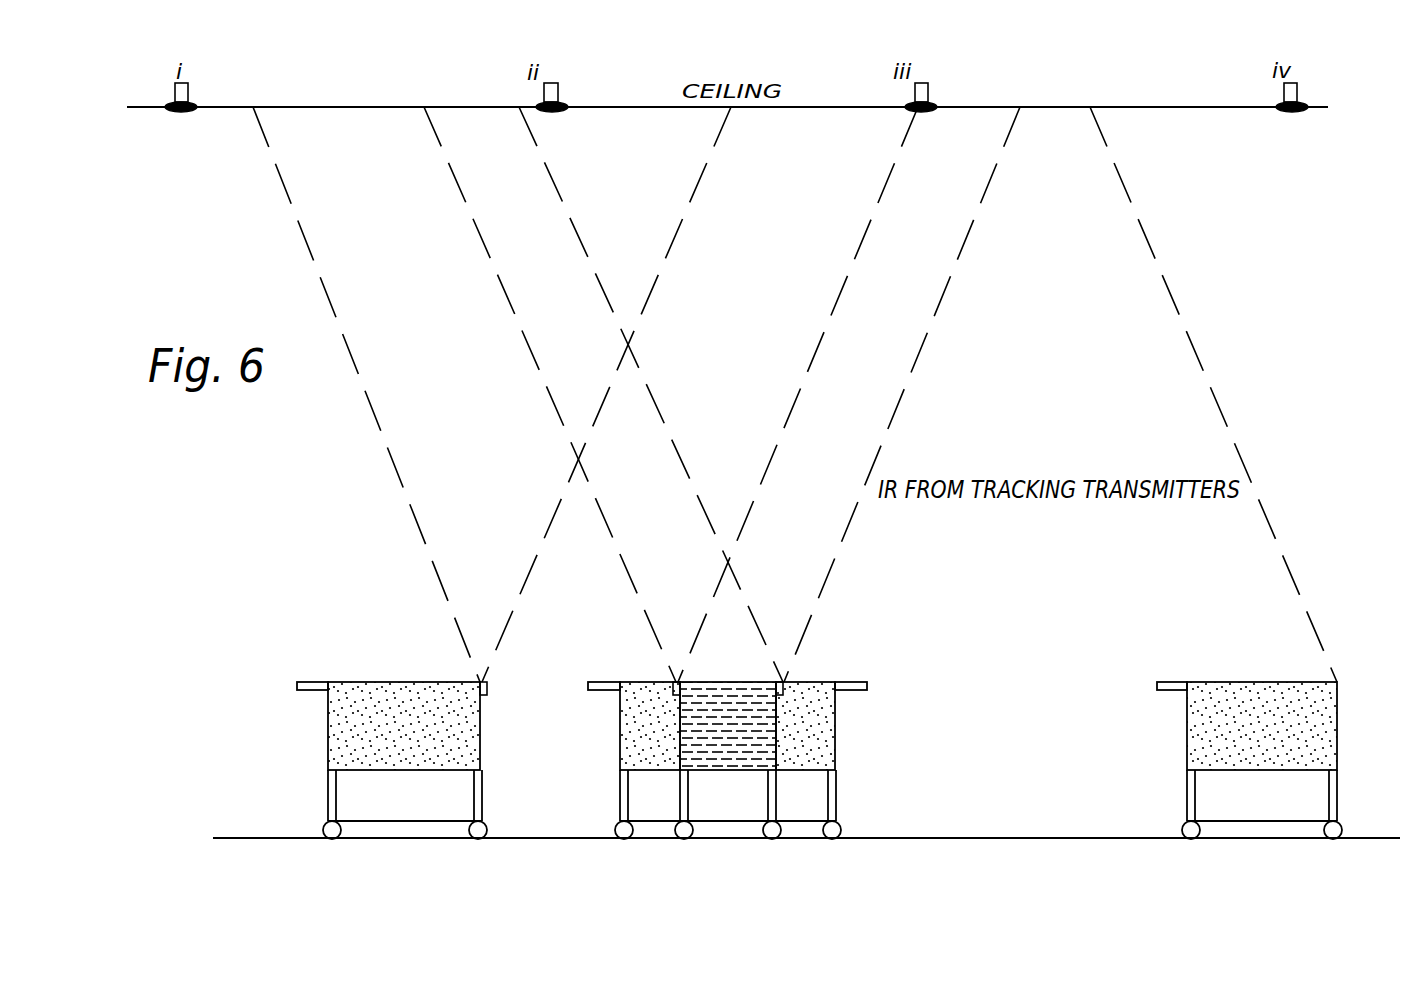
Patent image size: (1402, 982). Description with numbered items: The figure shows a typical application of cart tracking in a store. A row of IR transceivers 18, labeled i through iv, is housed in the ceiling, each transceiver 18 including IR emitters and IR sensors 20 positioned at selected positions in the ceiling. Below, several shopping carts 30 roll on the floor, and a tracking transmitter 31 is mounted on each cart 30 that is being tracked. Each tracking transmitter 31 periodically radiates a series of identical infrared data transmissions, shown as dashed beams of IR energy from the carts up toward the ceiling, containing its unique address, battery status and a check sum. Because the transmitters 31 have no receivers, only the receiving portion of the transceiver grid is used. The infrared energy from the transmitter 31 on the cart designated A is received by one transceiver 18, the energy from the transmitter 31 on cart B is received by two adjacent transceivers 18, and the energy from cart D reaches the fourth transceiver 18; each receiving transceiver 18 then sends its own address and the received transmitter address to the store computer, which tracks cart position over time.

The IR transceiver 18 is at (190, 94).
The IR emitters and IR sensors 20 is at (185, 112).
The shopping cart 30 is at (328, 757).
The tracking transmitter 31 is at (487, 687).